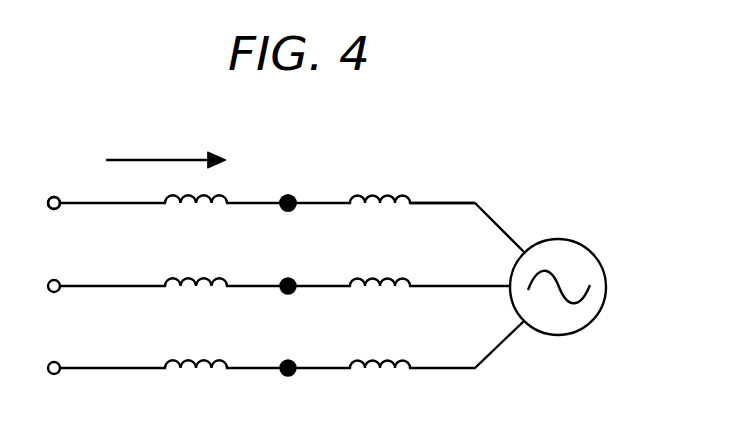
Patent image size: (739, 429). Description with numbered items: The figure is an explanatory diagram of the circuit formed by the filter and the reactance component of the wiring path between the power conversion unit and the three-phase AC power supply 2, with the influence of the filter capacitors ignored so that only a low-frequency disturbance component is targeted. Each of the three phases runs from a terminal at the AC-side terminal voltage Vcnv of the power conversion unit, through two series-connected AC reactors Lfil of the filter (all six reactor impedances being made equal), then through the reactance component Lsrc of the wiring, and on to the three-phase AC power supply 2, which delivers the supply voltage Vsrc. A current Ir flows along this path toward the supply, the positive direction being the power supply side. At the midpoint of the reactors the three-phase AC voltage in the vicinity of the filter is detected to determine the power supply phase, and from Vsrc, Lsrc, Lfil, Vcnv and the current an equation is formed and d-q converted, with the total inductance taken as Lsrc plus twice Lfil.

The three-phase AC power supply 2 is at (606, 287).
The AC reactor Lfil is at (192, 281).
The reactance component of the wiring Lsrc is at (380, 282).
The current value Ir is at (166, 148).
The AC-side terminal voltage Vcnv is at (57, 177).
The supply voltage Vsrc is at (444, 174).